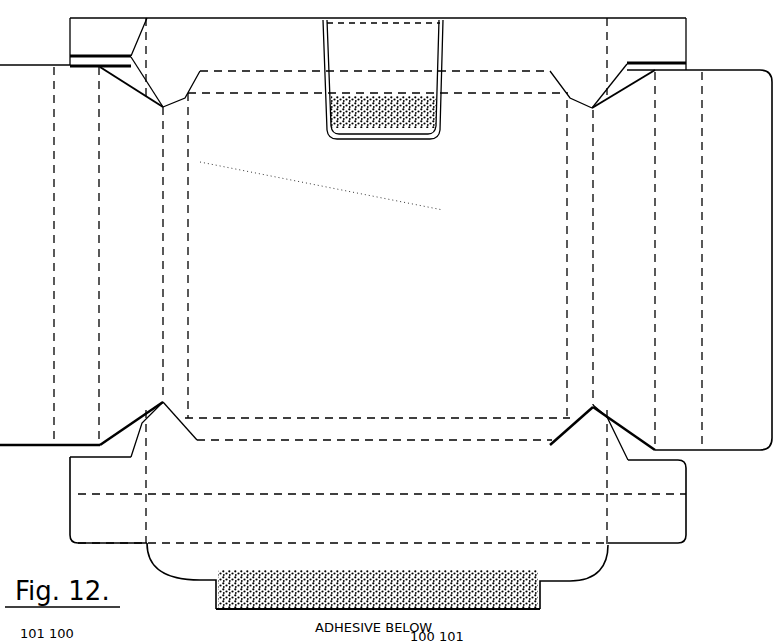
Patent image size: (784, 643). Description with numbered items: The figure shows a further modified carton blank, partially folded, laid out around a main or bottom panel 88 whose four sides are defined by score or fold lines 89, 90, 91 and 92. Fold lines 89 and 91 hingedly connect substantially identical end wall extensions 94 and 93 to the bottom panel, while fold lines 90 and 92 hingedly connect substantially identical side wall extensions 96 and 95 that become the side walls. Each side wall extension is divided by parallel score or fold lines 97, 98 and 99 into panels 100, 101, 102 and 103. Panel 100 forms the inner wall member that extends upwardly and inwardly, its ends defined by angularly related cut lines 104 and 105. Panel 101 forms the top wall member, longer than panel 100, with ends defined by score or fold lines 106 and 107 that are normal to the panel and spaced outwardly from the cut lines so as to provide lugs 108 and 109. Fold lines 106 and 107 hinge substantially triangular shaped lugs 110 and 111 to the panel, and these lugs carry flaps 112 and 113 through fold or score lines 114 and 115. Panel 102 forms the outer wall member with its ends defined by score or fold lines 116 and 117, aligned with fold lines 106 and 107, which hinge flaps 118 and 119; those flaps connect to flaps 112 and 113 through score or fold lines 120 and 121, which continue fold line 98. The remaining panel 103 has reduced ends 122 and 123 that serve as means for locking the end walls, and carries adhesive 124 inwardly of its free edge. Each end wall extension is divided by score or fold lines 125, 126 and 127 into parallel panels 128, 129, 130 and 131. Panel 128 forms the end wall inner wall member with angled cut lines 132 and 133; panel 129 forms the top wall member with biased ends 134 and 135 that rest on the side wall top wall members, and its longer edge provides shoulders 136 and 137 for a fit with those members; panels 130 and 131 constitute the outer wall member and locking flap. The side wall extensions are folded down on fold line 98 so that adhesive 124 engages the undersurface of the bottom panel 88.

The main or bottom panel 88 is at (388, 249).
The score or fold line 89 is at (190, 257).
The score or fold line 90 is at (492, 104).
The score or fold line 91 is at (568, 191).
The score or fold line 92 is at (443, 420).
The end wall extension 93 is at (752, 478).
The end wall extension 94 is at (34, 485).
The side wall extension 95 is at (640, 630).
The side wall extension 96 is at (720, 52).
The score or fold line 97 is at (276, 72).
The score or fold line 98 is at (243, 28).
The score or fold line 99 is at (386, 72).
The panel 100 is at (262, 93).
The panel 101 is at (323, 36).
The panel 102 is at (445, 39).
The panel 103 is at (443, 80).
The cut line 104 is at (195, 93).
The cut line 105 is at (553, 74).
The score or fold line 106 is at (150, 52).
The score or fold line 107 is at (606, 41).
The lug 108 is at (168, 100).
The lug 109 is at (568, 105).
The substantially triangular shaped lug 110 is at (150, 38).
The substantially triangular shaped lug 111 is at (616, 59).
The flap 112 is at (70, 32).
The flap 113 is at (686, 58).
The fold or score line 114 is at (130, 41).
The fold or score line 115 is at (625, 53).
The score or fold line 116 is at (149, 523).
The score or fold line 117 is at (607, 526).
The flap 118 is at (121, 70).
The flap 119 is at (662, 74).
The score or fold line 120 is at (100, 508).
The score or fold line 121 is at (670, 30).
The reduced end portion 122 is at (172, 570).
The reduced end portion 123 is at (588, 574).
The adhesive 124 is at (440, 117).
The score or fold line 125 is at (162, 190).
The score or fold line 126 is at (99, 217).
The score or fold line 127 is at (54, 250).
The panel 128 is at (186, 191).
The panel 129 is at (145, 286).
The panel 130 is at (90, 311).
The panel 131 is at (38, 368).
The cut line 132 is at (178, 111).
The cut line 133 is at (163, 402).
The biased end 134 is at (150, 100).
The biased end 135 is at (122, 431).
The shoulder 136 is at (165, 105).
The shoulder 137 is at (163, 402).